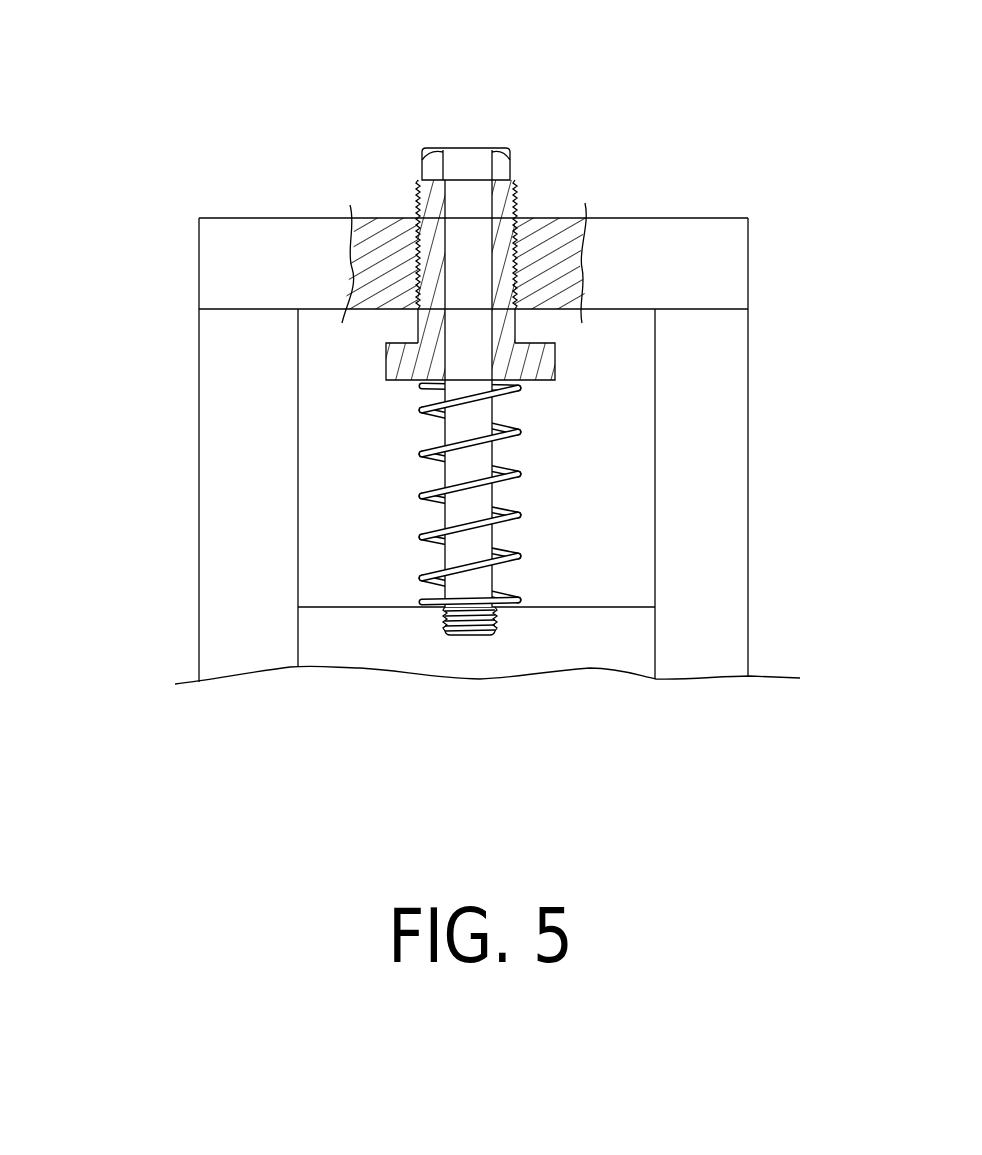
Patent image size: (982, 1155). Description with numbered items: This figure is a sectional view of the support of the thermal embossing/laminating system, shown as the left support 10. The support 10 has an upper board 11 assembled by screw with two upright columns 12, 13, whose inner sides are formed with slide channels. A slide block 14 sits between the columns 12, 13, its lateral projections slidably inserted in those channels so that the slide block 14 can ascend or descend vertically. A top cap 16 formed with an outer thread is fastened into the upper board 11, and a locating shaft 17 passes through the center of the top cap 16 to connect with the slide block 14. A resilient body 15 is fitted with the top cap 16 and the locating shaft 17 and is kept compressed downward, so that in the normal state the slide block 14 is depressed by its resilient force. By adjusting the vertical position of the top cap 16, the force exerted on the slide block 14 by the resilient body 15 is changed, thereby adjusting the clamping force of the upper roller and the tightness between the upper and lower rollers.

The left support 10 is at (140, 549).
The upper board 11 is at (680, 237).
The upright column 12 is at (208, 365).
The upright column 13 is at (722, 374).
The slide block 14 is at (458, 667).
The resilient body 15 is at (470, 493).
The top cap 16 is at (510, 244).
The locating shaft 17 is at (428, 160).